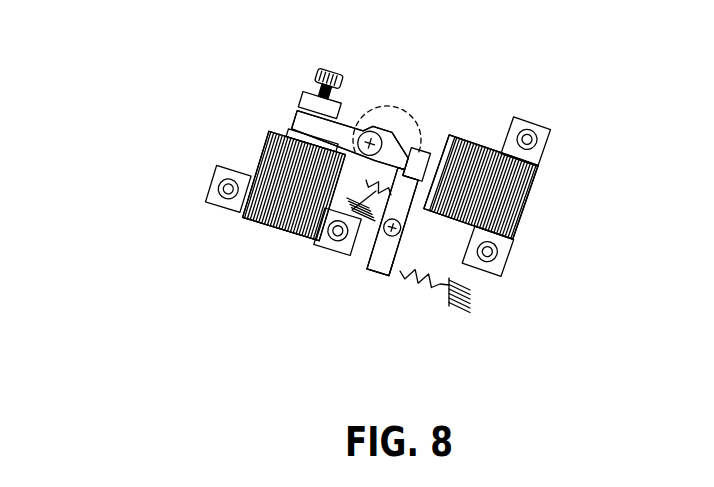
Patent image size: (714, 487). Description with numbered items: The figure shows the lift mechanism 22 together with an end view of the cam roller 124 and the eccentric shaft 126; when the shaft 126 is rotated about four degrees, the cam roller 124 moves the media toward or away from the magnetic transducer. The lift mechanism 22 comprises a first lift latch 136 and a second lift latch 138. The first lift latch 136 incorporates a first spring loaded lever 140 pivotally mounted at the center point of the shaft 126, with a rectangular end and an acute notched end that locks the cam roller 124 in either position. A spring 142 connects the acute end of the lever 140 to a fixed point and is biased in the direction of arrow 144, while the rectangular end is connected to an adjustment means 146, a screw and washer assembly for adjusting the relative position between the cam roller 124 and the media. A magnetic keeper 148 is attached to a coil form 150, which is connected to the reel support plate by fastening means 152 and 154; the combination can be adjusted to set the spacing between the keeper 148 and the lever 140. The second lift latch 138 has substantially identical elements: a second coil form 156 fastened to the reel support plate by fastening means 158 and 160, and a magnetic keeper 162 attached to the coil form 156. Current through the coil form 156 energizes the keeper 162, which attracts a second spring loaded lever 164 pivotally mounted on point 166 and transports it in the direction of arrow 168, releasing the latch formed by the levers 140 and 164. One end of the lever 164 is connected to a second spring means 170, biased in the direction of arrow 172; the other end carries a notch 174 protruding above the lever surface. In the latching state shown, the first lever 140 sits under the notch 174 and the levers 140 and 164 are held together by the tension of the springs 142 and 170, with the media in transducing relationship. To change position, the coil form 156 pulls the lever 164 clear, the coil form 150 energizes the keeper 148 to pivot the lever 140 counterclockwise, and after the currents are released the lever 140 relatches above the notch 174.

The lift mechanism 22 is at (260, 274).
The cam roller 124 is at (387, 100).
The eccentric shaft 126 is at (362, 130).
The first lift latch 136 is at (229, 125).
The second lift latch 138 is at (425, 324).
The first spring loaded lever 140 is at (295, 105).
The spring 142 is at (330, 205).
The arrow 144 is at (367, 181).
The adjustment means 146 is at (341, 59).
The magnetic keeper 148 is at (255, 112).
The coil form 150 is at (228, 234).
The fastening means 152 is at (173, 181).
The fastening means 154 is at (310, 257).
The second coil form 156 is at (533, 178).
The fastening means 158 is at (560, 243).
The fastening means 160 is at (545, 118).
The magnetic keeper 162 is at (440, 158).
The second spring loaded lever 164 is at (335, 314).
The point 166 is at (385, 235).
The arrow 168 is at (404, 222).
The second spring means 170 is at (363, 322).
The arrow 172 is at (422, 320).
The notch 174 is at (410, 157).